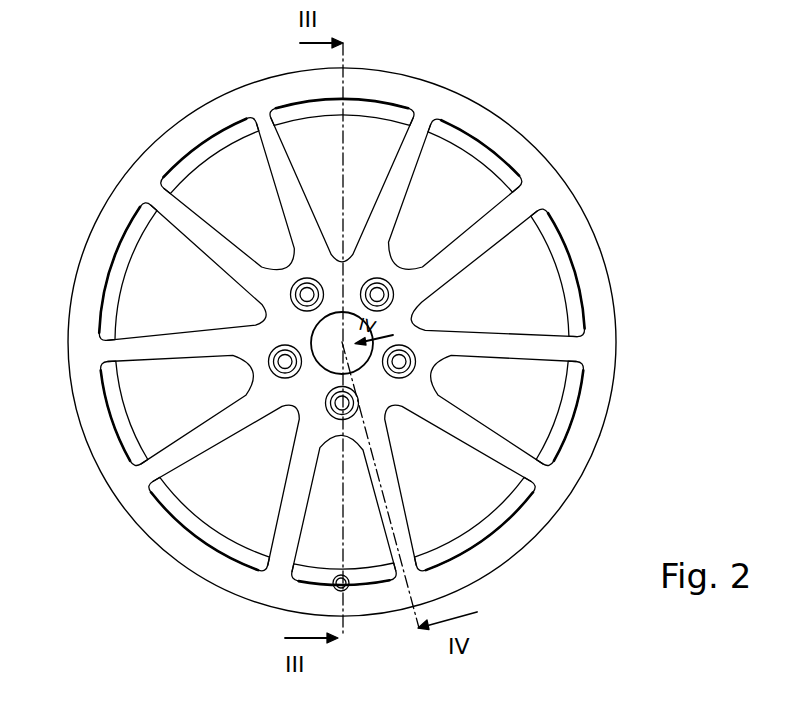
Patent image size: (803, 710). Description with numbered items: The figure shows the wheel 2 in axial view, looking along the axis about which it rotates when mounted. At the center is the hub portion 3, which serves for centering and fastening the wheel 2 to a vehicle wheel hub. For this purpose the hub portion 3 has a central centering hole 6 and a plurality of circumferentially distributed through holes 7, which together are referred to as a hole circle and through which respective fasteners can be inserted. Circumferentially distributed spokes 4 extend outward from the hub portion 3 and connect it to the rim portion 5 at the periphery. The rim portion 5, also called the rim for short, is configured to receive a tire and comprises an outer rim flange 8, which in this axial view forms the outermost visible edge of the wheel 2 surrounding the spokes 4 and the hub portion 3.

The wheel 2 is at (106, 146).
The hub portion 3 is at (408, 321).
The spokes 4 is at (493, 253).
The rim portion 5 is at (607, 267).
The central centering hole 6 is at (311, 343).
The through holes 7 is at (283, 365).
The outer rim flange 8 is at (503, 132).